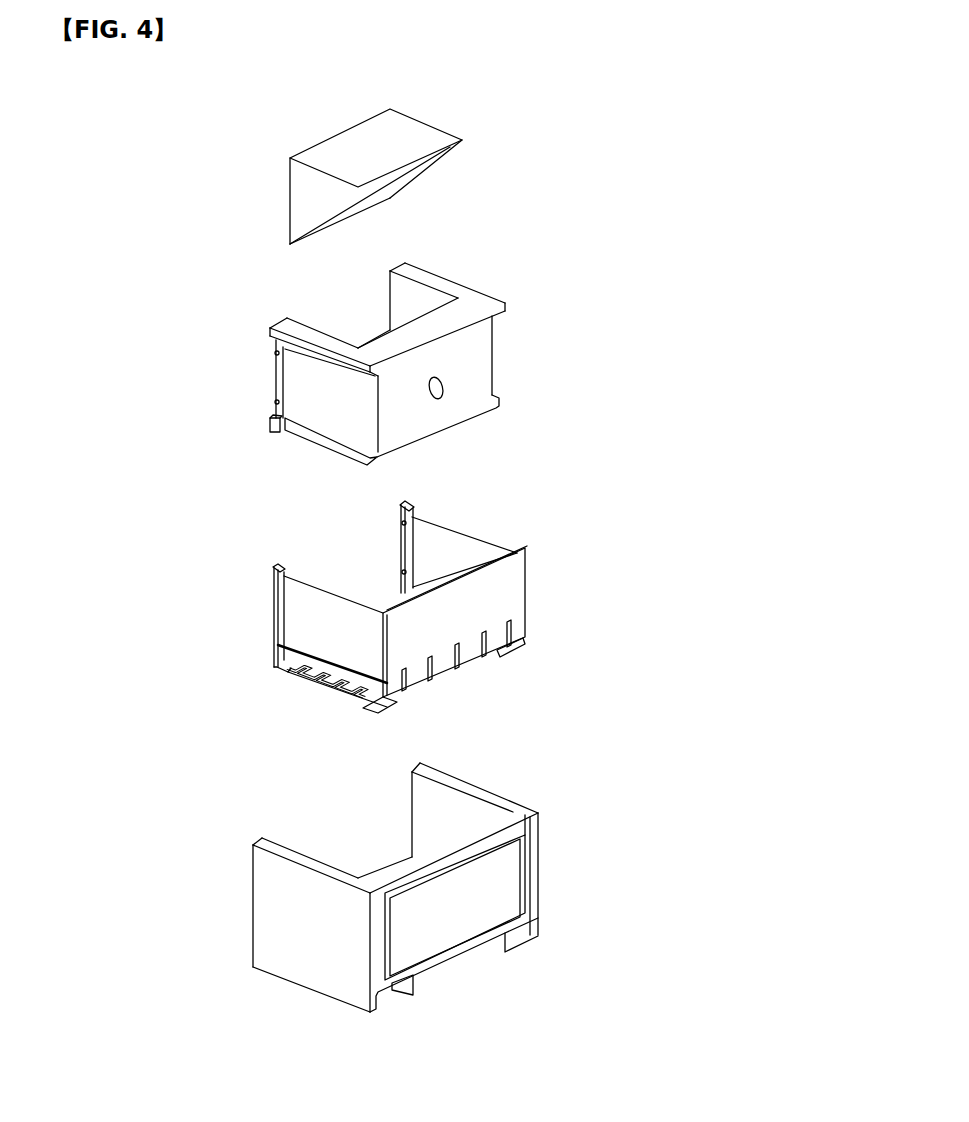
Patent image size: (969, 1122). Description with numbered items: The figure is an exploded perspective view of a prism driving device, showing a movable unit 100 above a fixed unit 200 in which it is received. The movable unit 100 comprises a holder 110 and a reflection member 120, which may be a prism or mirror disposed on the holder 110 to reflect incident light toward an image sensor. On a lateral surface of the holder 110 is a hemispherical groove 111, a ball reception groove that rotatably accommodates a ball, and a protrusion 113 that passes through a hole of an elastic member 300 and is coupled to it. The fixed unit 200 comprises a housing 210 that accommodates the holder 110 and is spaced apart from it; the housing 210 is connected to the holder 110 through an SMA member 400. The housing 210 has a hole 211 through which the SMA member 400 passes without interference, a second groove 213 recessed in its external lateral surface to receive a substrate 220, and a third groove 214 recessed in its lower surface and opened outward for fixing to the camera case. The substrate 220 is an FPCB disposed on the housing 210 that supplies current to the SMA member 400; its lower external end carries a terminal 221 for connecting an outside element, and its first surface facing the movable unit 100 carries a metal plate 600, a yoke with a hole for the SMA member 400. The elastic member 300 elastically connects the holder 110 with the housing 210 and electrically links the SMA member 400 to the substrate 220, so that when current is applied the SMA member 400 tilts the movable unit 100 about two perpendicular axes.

The movable unit 100 is at (587, 155).
The holder 110 is at (380, 347).
The groove 111 is at (443, 383).
The protrusion 113 is at (277, 353).
The reflection member 120 is at (461, 142).
The fixed unit 200 is at (652, 577).
The housing 210 is at (449, 907).
The hole 211 is at (517, 857).
The second groove 213 is at (465, 917).
The third groove 214 is at (392, 990).
The substrate 220 is at (505, 630).
The terminal 221 is at (458, 658).
The elastic member 300 is at (261, 670).
The SMA member 400 is at (413, 583).
The plate 600 is at (506, 553).